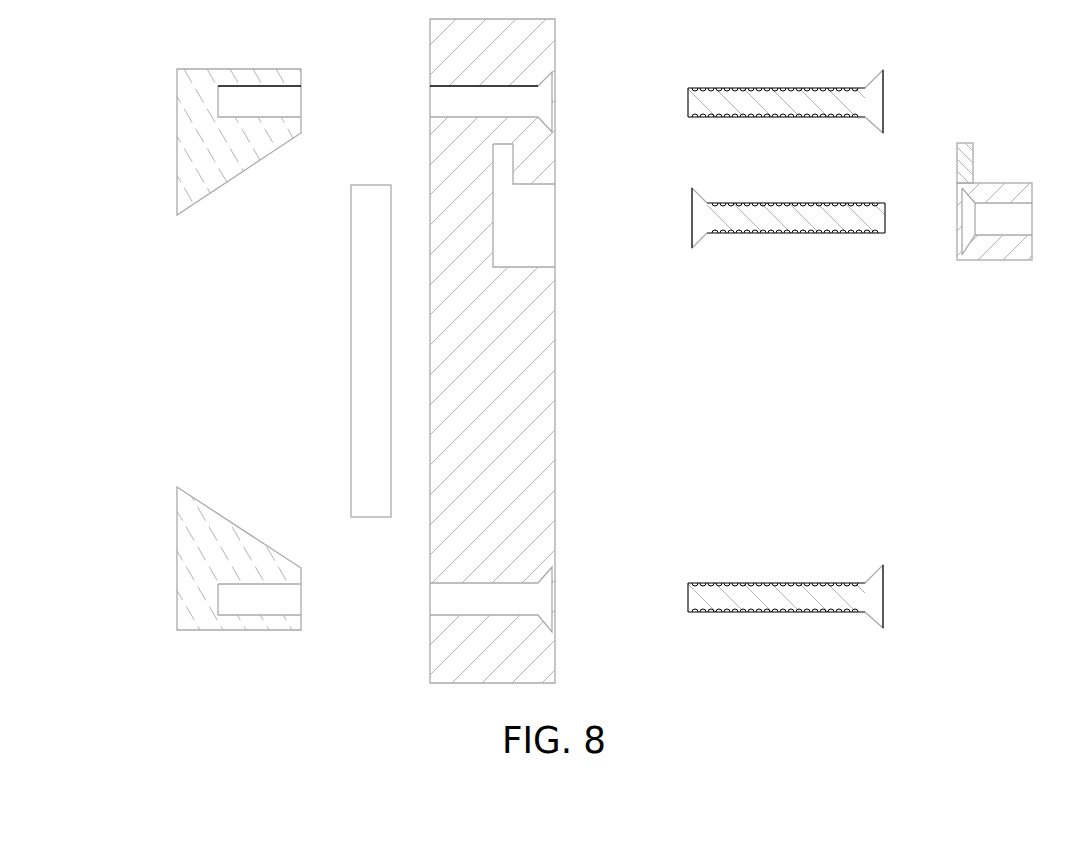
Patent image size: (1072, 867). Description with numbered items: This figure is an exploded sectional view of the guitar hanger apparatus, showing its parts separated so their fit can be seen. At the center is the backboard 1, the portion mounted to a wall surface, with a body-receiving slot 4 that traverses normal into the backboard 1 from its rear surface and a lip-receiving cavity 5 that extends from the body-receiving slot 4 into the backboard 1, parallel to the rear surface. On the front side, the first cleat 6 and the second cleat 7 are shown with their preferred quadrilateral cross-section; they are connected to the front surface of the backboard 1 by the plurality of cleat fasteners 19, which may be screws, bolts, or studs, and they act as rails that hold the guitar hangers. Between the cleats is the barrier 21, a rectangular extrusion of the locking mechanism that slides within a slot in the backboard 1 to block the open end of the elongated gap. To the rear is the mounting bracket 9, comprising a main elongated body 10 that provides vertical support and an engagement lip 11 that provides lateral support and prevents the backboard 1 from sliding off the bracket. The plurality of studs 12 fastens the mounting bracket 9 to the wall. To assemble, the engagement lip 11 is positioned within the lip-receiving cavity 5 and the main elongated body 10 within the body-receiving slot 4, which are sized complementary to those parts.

The backboard 1 is at (503, 360).
The body-receiving slot 4 is at (555, 232).
The lip-receiving cavity 5 is at (502, 188).
The first cleat 6 is at (215, 158).
The second cleat 7 is at (212, 560).
The mounting bracket 9 is at (995, 298).
The main elongated body 10 is at (1018, 221).
The engagement lip 11 is at (972, 163).
The plurality of studs 12 is at (886, 219).
The plurality of cleat fasteners 19 is at (883, 100).
The barrier 21 is at (360, 363).